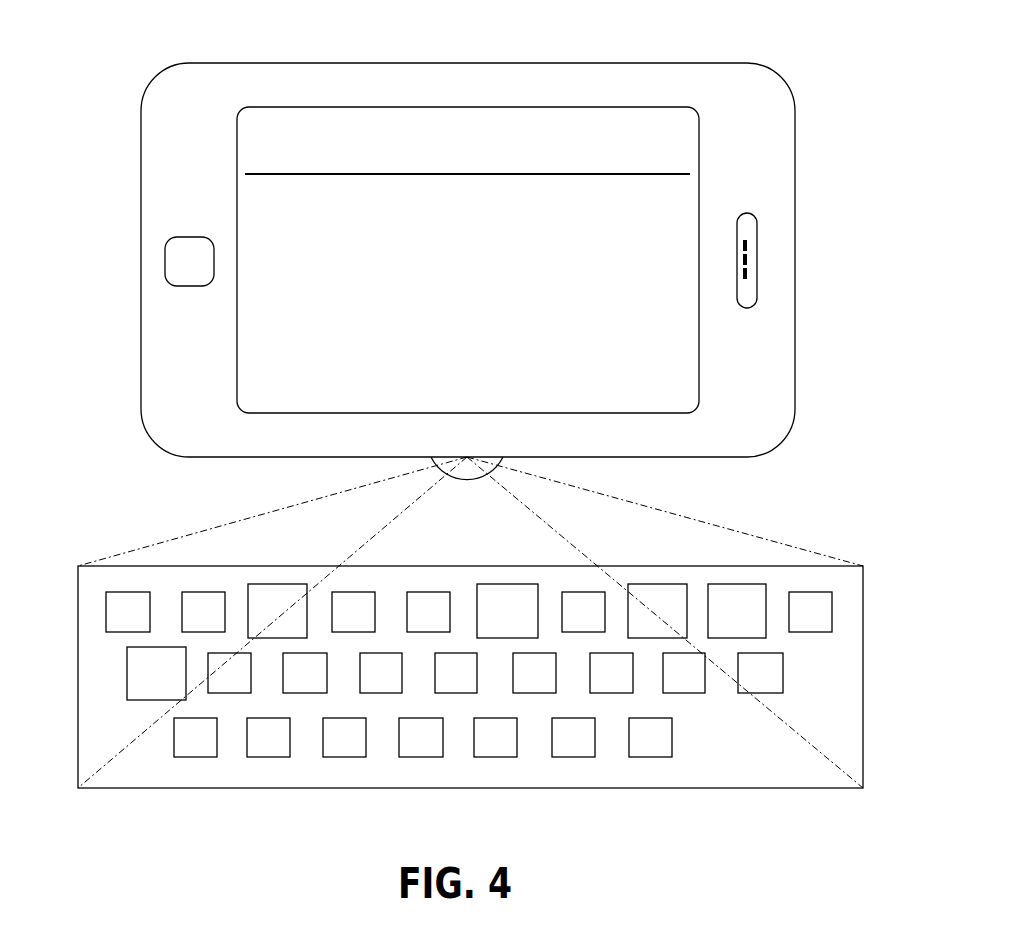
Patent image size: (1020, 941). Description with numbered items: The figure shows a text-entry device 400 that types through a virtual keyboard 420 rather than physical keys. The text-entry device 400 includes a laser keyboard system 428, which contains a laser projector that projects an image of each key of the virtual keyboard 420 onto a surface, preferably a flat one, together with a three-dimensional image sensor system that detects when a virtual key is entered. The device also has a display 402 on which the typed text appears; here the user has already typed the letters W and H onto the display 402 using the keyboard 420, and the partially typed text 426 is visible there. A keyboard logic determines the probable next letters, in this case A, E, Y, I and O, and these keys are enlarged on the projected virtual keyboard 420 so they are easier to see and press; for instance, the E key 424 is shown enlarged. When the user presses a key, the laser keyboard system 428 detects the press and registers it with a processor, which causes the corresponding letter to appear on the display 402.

The text-entry device 400 is at (484, 296).
The display 402 is at (468, 206).
The virtual keyboard 420 is at (470, 677).
The 'E' key 424 is at (194, 562).
The partially typed text 426 is at (181, 165).
The laser keyboard system 428 is at (470, 622).